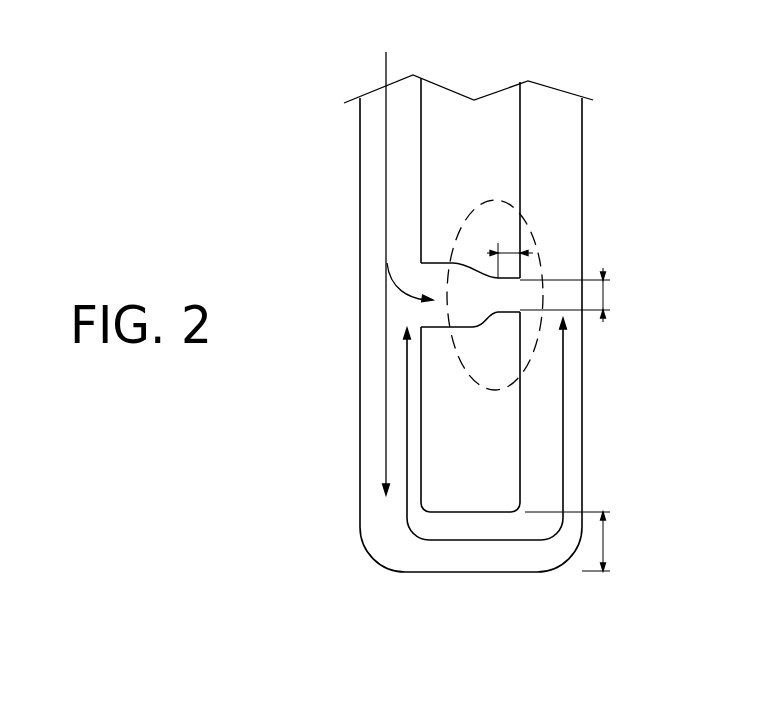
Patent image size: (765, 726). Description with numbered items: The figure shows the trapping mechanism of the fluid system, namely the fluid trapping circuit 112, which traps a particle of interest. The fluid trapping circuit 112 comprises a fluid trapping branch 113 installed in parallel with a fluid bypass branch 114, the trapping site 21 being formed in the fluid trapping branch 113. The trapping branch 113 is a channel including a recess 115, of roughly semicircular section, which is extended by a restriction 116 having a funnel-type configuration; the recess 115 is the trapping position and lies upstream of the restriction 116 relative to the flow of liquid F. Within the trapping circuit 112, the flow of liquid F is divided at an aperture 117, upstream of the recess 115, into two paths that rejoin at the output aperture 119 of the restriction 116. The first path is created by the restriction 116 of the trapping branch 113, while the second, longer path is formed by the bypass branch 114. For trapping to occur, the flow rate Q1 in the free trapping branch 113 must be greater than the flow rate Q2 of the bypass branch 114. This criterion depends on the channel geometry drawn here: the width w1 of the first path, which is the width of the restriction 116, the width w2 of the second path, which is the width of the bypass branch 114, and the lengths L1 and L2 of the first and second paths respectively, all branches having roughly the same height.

The fluid trapping circuit 112 is at (588, 219).
The fluid trapping branch 113 is at (485, 220).
The fluid bypass branch 114 is at (488, 557).
The recess 115 is at (437, 255).
The restriction 116 is at (507, 312).
The aperture 117 is at (418, 262).
The output aperture 119 is at (515, 295).
The trapping site 21 is at (487, 390).
The flow of liquid F is at (386, 259).
The flow rate in free trapping branch Q1 is at (411, 282).
The flow rate of bypass branch Q2 is at (471, 429).
The length of first path L1 is at (510, 251).
The length of second path L2 is at (513, 540).
The width of first path w1 is at (580, 295).
The width of second path w2 is at (580, 541).